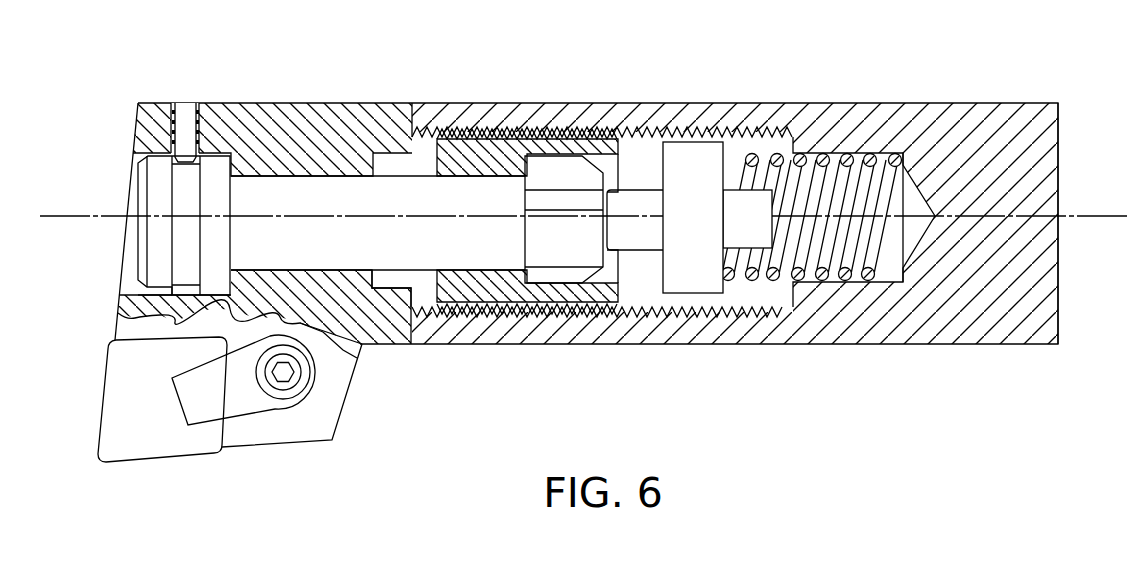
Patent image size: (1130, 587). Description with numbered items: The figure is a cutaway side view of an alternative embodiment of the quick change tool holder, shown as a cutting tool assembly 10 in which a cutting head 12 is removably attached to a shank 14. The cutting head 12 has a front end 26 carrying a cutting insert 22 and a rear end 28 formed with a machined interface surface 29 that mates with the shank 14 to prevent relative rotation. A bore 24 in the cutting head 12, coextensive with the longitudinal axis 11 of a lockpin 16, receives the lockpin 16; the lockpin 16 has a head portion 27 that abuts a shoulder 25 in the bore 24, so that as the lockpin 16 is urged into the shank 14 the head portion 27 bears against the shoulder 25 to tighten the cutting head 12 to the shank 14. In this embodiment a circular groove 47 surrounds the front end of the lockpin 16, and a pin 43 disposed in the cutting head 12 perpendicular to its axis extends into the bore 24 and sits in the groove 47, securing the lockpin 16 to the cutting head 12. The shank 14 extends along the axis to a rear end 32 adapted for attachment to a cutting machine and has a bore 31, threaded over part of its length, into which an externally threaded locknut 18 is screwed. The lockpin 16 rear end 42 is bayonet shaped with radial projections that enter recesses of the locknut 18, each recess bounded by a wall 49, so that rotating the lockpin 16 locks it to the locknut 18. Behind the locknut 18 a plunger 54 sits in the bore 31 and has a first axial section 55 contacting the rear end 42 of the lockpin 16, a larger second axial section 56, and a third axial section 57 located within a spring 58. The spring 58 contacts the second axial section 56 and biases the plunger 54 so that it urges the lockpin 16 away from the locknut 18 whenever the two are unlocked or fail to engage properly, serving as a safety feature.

The cutting tool assembly 10 is at (582, 104).
The longitudinal axis 11 is at (68, 218).
The cutting head 12 is at (278, 101).
The shank 14 is at (855, 103).
The lockpin 16 is at (130, 273).
The locknut 18 is at (484, 290).
The cutting insert 22 is at (152, 443).
The bore 24 is at (148, 293).
The shoulder 25 is at (187, 104).
The front end 26 is at (130, 153).
The head portion 27 is at (357, 352).
The rear end 28 is at (400, 318).
The interface surface 29 is at (413, 128).
The bore 31 is at (545, 320).
The rear end 32 is at (1022, 330).
The rear end 42 is at (562, 173).
The pin 43 is at (193, 104).
The circular groove 47 is at (185, 183).
The wall 49 is at (184, 106).
The plunger 54 is at (700, 142).
The first axial section 55 is at (652, 257).
The second axial section 56 is at (697, 297).
The third axial section 57 is at (763, 257).
The spring 58 is at (843, 283).